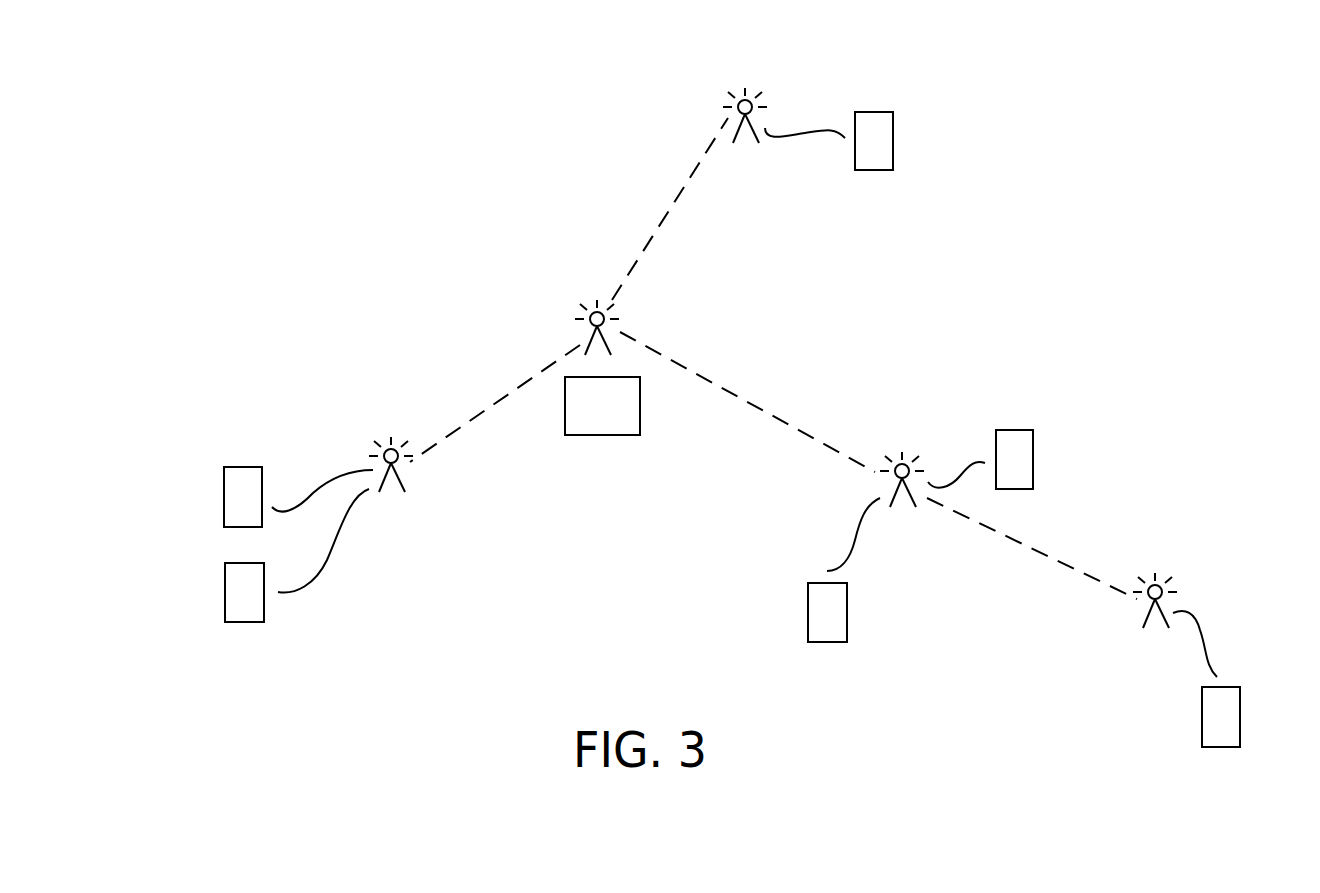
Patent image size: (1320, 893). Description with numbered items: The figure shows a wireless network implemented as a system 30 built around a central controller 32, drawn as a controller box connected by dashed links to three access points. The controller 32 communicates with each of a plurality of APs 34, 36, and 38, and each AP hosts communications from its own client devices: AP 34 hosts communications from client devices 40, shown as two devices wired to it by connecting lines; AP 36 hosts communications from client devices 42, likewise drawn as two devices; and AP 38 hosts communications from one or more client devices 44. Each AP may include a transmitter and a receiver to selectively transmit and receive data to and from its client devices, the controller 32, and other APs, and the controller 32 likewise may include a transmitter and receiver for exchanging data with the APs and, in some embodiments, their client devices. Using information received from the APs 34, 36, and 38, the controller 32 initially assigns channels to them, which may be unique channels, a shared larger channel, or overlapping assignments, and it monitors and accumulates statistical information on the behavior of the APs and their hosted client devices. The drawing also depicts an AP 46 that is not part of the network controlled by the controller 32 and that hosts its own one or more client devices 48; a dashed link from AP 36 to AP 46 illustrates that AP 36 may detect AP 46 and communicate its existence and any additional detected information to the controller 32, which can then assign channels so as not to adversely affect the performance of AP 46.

The system 30 is at (350, 98).
The central controller 32 is at (603, 435).
The AP 34 is at (391, 422).
The AP 36 is at (913, 445).
The AP 38 is at (745, 73).
The client devices 40 is at (224, 496).
The client devices 42 is at (1033, 455).
The client devices 44 is at (893, 132).
The AP 46 is at (1167, 566).
The client devices 48 is at (1240, 712).